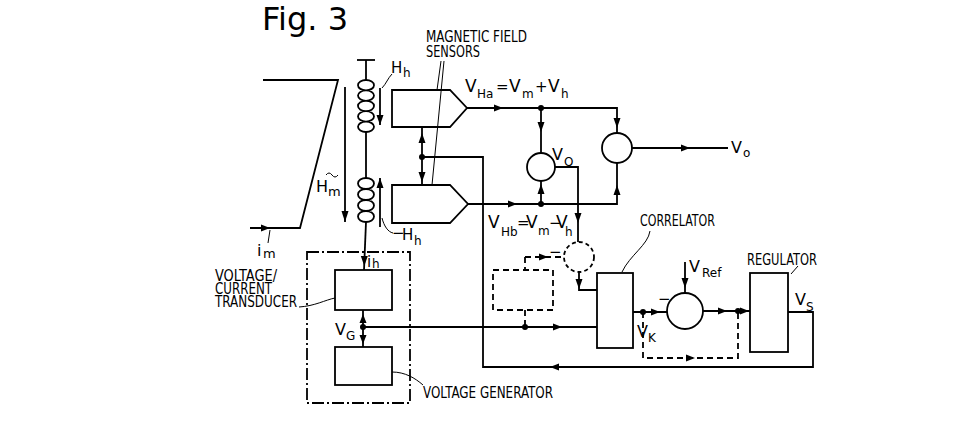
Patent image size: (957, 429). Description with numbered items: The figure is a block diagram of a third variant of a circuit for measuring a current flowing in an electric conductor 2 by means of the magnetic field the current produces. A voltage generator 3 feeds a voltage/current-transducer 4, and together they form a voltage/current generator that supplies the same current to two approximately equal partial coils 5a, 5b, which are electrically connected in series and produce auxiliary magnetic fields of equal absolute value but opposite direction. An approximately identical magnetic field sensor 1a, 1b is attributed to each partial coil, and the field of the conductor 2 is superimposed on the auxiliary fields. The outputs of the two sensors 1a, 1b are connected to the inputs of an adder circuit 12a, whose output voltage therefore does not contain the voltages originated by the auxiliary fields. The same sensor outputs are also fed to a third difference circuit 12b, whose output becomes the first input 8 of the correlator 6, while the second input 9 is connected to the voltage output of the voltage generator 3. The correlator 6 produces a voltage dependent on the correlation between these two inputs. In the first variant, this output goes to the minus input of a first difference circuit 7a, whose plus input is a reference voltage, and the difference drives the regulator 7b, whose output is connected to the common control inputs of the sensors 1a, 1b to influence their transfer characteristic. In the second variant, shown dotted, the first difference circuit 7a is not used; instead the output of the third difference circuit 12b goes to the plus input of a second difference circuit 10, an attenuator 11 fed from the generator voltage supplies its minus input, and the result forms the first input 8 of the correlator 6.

The electric conductor 2 is at (288, 82).
The first partial coil 5a is at (369, 133).
The second partial coil 5b is at (369, 178).
The first magnetic field sensor 1a is at (456, 113).
The second magnetic field sensor 1b is at (438, 192).
The adder circuit 12a is at (620, 153).
The third difference circuit 12b is at (535, 166).
The second difference circuit 10 is at (590, 253).
The attenuator 11 is at (510, 277).
The first input of correlator 8 is at (587, 293).
The correlator circuit 6 is at (625, 287).
The second input of correlator 9 is at (588, 333).
The first difference circuit 7a is at (684, 325).
The regulator 7b is at (762, 300).
The voltage/current-transducer 4 is at (347, 285).
The voltage generator 3 is at (346, 362).